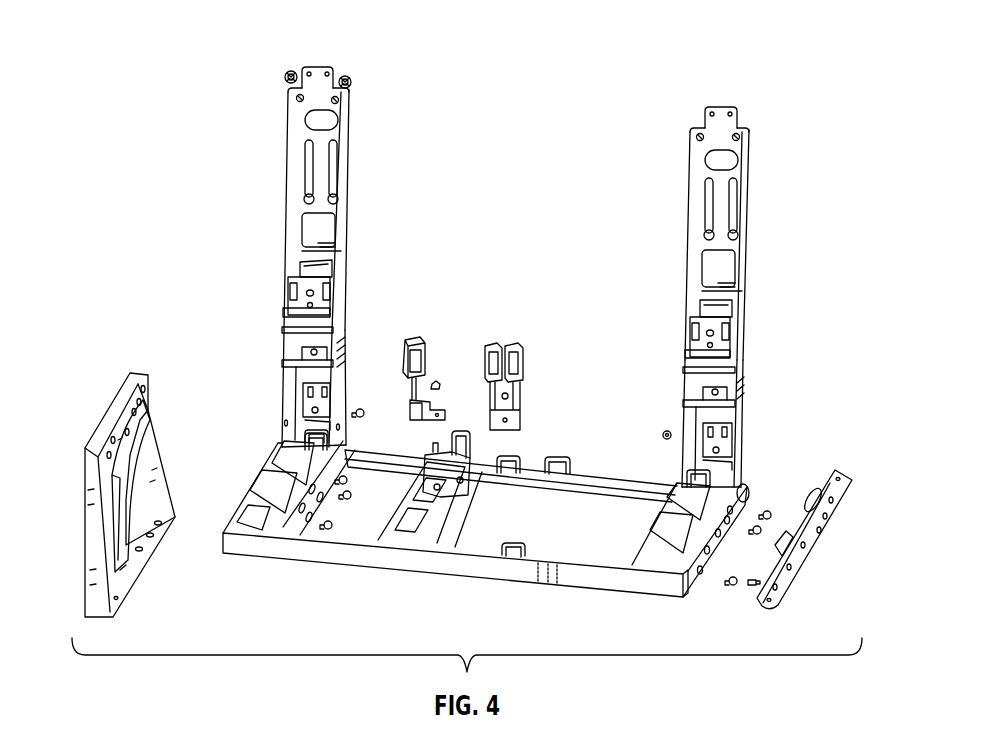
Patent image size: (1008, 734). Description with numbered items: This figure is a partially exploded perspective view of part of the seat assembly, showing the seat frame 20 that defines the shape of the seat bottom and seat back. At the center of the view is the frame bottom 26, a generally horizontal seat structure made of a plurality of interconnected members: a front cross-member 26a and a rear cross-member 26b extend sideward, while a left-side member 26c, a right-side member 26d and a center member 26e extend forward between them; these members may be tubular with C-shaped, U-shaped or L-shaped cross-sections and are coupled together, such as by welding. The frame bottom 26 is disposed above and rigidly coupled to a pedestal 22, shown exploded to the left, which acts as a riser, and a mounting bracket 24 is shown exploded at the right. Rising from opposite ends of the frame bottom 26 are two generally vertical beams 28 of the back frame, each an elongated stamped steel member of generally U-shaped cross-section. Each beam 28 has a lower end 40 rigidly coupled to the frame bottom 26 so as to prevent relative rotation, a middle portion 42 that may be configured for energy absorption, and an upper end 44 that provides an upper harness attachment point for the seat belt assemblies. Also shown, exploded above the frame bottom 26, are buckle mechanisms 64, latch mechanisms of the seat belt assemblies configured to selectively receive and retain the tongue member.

The seat frame 20 is at (815, 97).
The pedestal 22 is at (85, 557).
The mounting bracket 24 is at (806, 553).
The frame bottom 26 is at (476, 519).
The front cross-member 26a is at (477, 574).
The rear cross-member 26b is at (623, 482).
The left-side member 26c is at (243, 502).
The right-side member 26d is at (633, 557).
The center member 26e is at (483, 514).
The beam 28 is at (477, 284).
The lower end 40 is at (280, 397).
The middle portion 42 is at (340, 320).
The upper end 44 is at (348, 147).
The buckle mechanism 64 is at (412, 330).